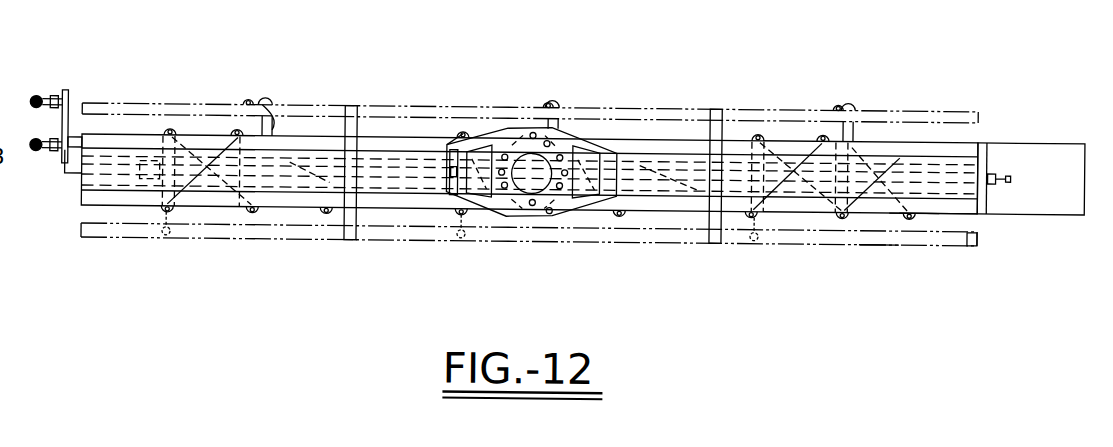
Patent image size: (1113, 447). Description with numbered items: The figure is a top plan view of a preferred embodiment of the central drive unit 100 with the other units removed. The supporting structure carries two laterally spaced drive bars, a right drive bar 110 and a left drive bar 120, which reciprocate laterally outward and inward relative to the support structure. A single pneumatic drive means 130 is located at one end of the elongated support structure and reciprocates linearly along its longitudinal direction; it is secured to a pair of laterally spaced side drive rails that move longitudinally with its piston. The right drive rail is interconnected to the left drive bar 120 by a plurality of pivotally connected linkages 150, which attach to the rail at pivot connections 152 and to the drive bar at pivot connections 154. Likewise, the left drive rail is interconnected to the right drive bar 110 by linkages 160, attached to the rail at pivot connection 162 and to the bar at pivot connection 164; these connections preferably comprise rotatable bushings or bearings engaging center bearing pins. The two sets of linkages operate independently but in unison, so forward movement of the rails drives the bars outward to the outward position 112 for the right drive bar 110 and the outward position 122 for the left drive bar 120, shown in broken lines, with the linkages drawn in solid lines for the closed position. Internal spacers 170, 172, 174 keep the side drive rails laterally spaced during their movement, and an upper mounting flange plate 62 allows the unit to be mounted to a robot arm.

The upper mounting flange plate 62 is at (566, 133).
The central drive unit 100 is at (898, 252).
The right drive bar 110 is at (945, 134).
The outward position of the right drive bar 112 is at (950, 98).
The left drive bar 120 is at (960, 204).
The outward position of the left drive bar 122 is at (647, 231).
The pneumatic drive means 130 is at (992, 178).
The linkages 150 is at (162, 216).
The pivot connections 152 is at (169, 124).
The pivot connections 154 is at (167, 239).
The linkages 160 is at (270, 108).
The pivot connection 162 is at (256, 210).
The pivot connection 164 is at (247, 101).
The internal spacer 170 is at (929, 215).
The internal spacer 172 is at (305, 180).
The internal spacer 174 is at (662, 164).